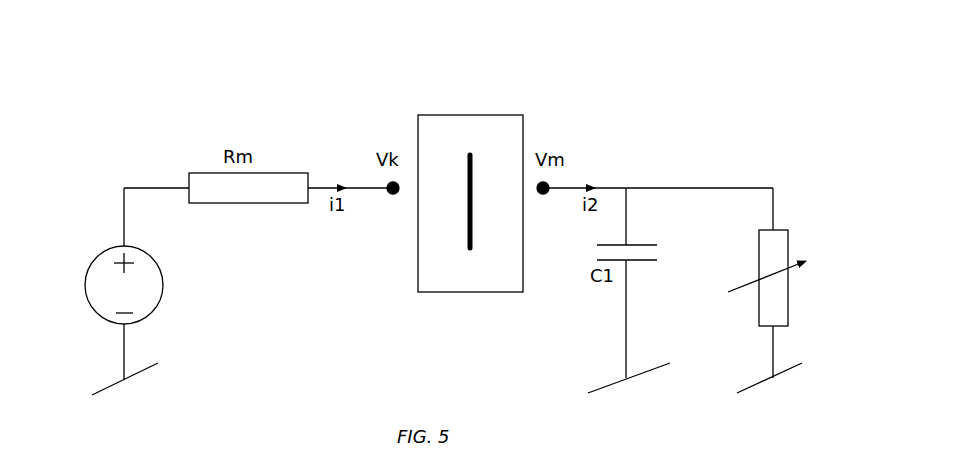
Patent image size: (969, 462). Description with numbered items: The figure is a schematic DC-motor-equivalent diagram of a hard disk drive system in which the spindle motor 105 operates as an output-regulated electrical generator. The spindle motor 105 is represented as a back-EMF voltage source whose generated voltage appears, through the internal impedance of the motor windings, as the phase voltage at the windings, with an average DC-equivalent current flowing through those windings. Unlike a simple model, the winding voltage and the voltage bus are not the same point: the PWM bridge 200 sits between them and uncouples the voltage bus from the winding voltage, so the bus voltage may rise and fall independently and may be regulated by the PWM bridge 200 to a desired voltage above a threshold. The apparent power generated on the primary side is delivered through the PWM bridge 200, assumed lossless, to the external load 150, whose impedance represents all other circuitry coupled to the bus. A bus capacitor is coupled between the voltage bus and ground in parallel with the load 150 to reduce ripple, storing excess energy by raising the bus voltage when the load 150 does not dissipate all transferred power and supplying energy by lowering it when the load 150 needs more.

The spindle motor 105 is at (72, 291).
The PWM bridge 200 is at (530, 127).
The external load 150 is at (796, 245).